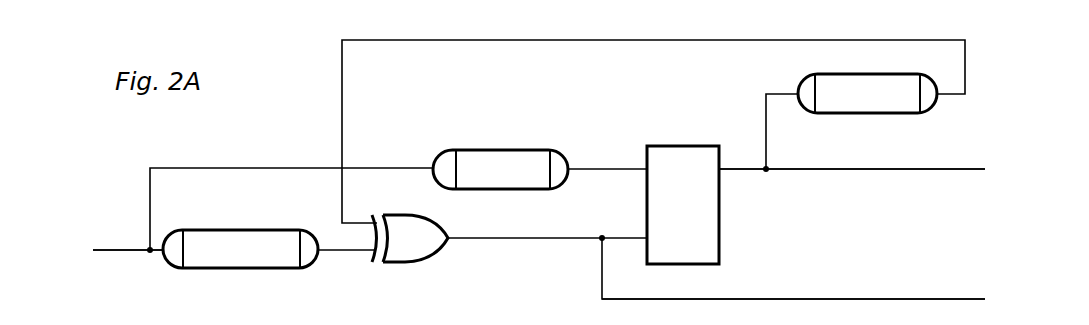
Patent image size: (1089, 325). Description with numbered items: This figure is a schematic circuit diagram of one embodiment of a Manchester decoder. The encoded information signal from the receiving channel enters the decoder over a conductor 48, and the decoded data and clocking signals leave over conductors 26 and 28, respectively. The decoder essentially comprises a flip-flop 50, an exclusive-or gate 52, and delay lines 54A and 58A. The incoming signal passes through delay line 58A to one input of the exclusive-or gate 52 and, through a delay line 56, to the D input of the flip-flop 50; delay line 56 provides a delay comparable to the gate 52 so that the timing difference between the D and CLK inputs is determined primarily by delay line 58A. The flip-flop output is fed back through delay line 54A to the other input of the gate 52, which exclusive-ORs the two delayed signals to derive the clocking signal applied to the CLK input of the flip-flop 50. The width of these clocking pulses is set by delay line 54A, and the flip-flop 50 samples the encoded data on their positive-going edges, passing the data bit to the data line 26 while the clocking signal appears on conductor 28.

The conductor 48 is at (123, 252).
The delay line 58A is at (228, 269).
The exclusive-or gate 52 is at (413, 263).
The delay line 56 is at (487, 150).
The flip-flop 50 is at (690, 146).
The delay line 54A is at (879, 107).
The conductor 26 is at (915, 170).
The conductor 28 is at (910, 299).